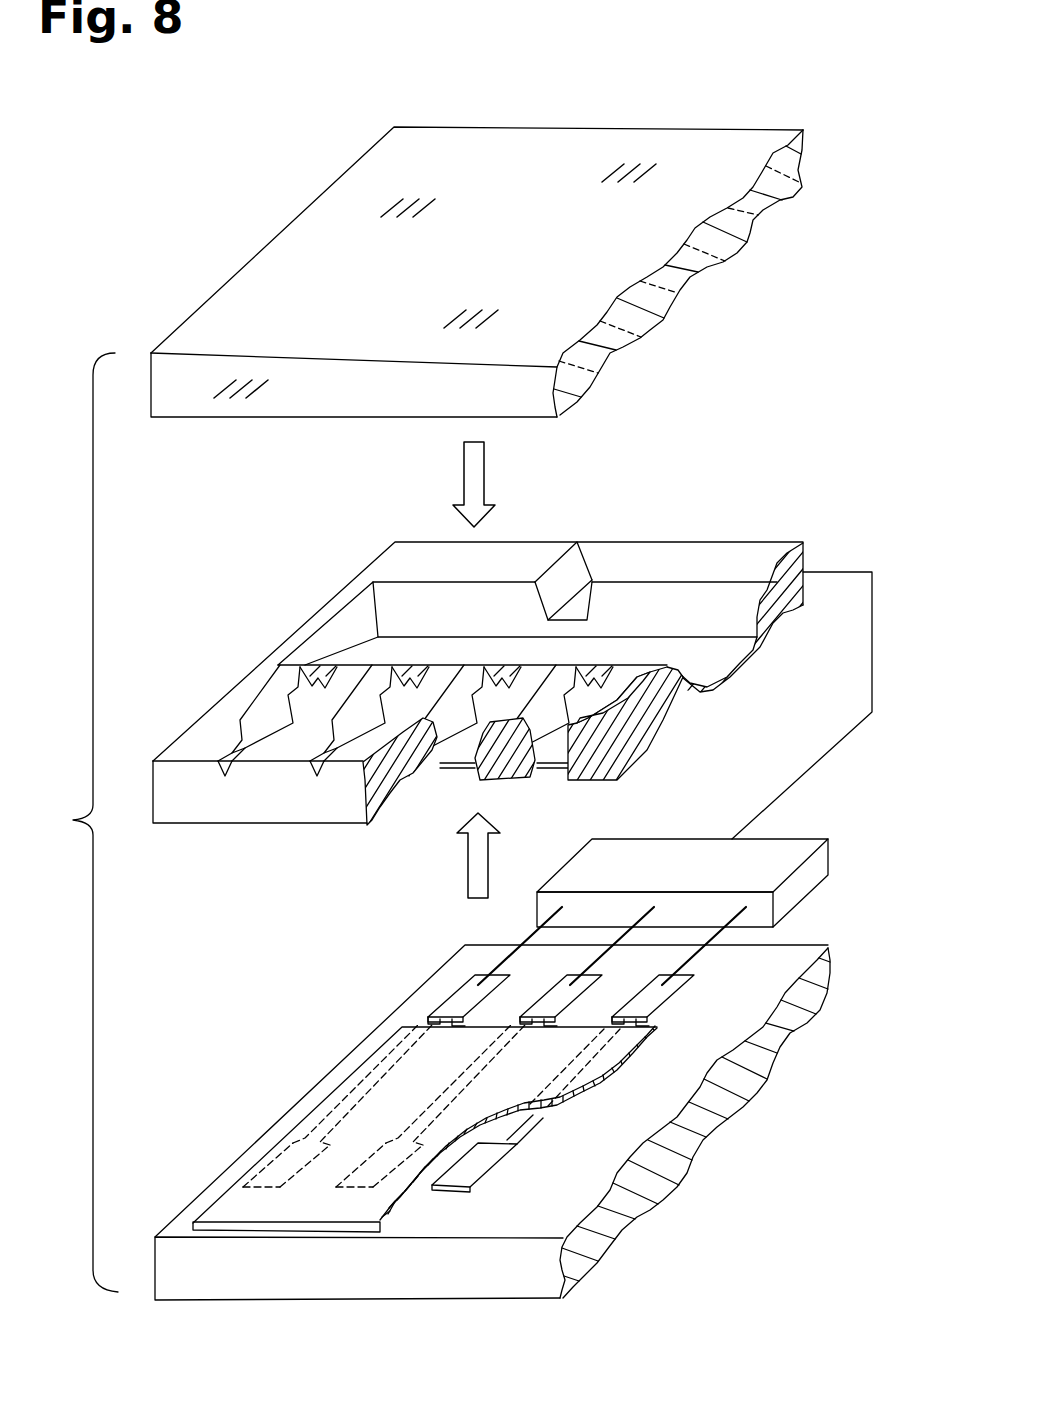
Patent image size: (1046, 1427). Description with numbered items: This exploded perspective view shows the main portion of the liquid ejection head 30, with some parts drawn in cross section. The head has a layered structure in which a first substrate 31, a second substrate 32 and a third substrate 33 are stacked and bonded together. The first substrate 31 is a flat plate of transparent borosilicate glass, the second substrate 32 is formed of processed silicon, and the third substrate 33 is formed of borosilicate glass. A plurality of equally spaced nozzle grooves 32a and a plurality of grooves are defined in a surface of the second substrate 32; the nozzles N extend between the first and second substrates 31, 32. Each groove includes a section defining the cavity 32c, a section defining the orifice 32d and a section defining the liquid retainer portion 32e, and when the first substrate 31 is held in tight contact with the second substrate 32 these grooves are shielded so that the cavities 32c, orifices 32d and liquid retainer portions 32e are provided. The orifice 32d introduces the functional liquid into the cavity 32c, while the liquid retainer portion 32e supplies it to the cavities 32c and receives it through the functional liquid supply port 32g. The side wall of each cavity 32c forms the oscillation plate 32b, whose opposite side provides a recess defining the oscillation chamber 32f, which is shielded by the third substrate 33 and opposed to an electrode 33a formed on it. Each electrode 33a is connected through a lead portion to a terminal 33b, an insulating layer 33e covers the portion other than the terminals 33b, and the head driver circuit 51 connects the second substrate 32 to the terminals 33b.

The liquid ejection head 30 is at (73, 822).
The first substrate 31 is at (670, 140).
The second substrate 32 is at (539, 668).
The nozzle grooves 32a is at (225, 748).
The oscillation plate 32b is at (455, 770).
The cavity 32c is at (270, 712).
The orifice 32d is at (320, 690).
The liquid retainer portion 32e is at (656, 590).
The oscillation chamber 32f is at (550, 770).
The functional liquid supply port 32g is at (580, 568).
The nozzles N is at (224, 770).
The head driver circuit 51 is at (805, 888).
The third substrate 33 is at (525, 1103).
The electrode 33a is at (487, 1170).
The terminal 33b is at (675, 992).
The insulating layer 33e is at (617, 1085).